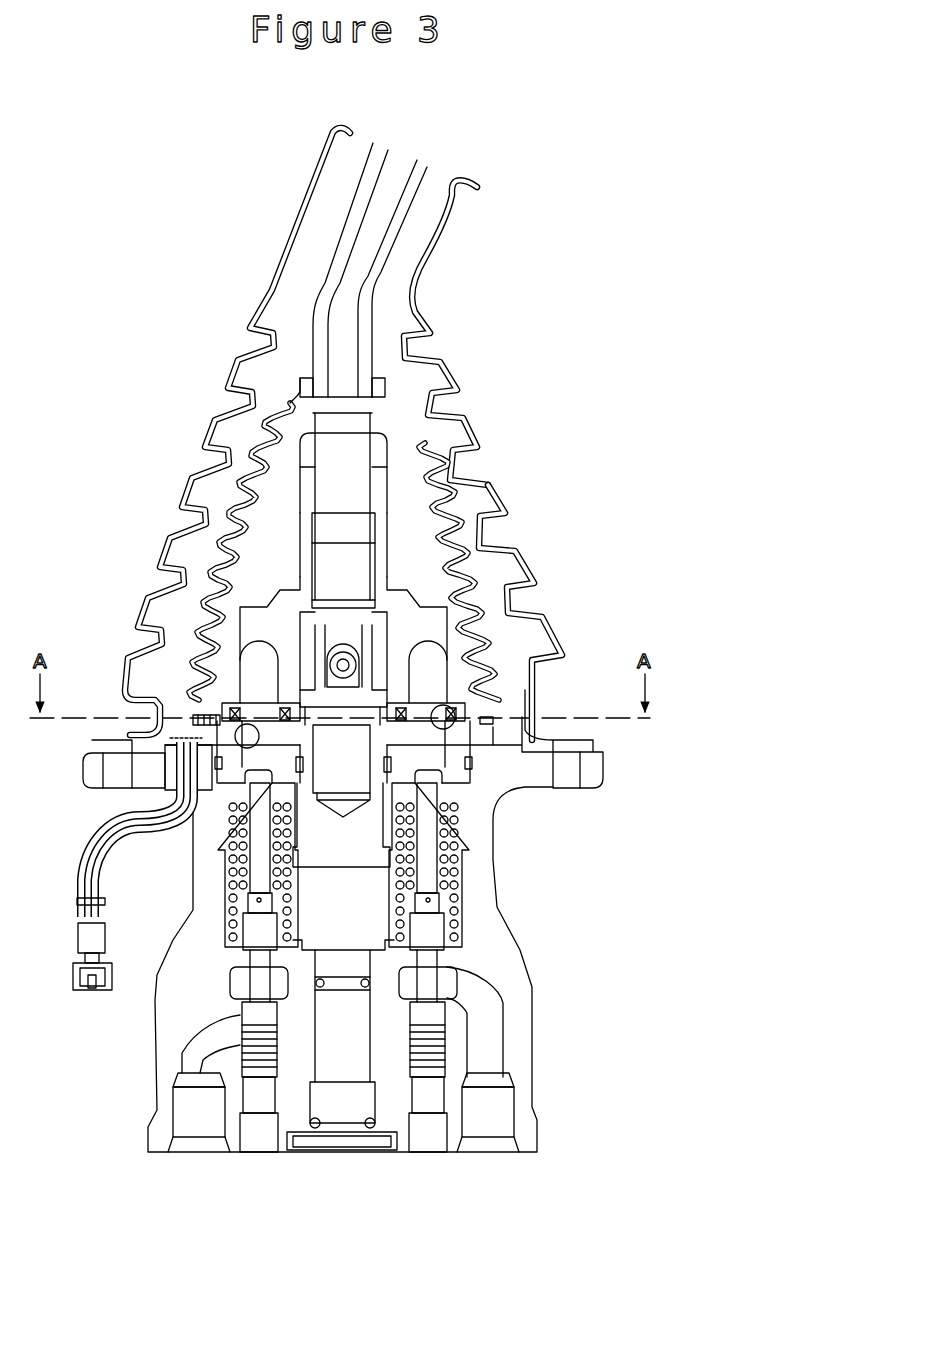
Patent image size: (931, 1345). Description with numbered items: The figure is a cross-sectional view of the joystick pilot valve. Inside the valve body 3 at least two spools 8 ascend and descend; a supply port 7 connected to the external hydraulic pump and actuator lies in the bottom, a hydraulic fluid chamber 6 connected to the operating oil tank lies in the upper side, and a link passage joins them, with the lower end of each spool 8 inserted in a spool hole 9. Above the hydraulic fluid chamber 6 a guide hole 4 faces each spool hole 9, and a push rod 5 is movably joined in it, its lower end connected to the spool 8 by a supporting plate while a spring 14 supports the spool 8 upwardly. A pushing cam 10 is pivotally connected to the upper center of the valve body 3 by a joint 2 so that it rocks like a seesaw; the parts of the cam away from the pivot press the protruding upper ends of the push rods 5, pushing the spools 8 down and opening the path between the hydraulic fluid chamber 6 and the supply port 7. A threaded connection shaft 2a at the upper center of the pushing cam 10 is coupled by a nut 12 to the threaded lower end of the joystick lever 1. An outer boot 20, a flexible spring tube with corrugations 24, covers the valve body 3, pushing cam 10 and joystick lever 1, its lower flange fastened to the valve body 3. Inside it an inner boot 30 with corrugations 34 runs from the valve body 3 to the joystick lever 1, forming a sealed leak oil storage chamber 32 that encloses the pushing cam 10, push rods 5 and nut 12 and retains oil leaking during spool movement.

The joystick lever 1 is at (358, 317).
The joint 2 is at (320, 690).
The connection shaft 2a is at (352, 563).
The valve body 3 is at (177, 990).
The guide hole 4 is at (455, 712).
The push rod 5 is at (243, 652).
The hydraulic fluid chamber 6 is at (350, 907).
The supply port 7 is at (200, 1057).
The spool 8 is at (427, 863).
The spool hole 9 is at (258, 1142).
The pushing cam 10 is at (405, 588).
The nut 12 is at (387, 443).
The spring 14 is at (449, 818).
The outer boot 20 is at (466, 326).
The corrugations 24 is at (507, 548).
The inner boot 30 is at (235, 536).
The leak oil storage chamber 32 is at (283, 515).
The corrugations 34 is at (386, 509).